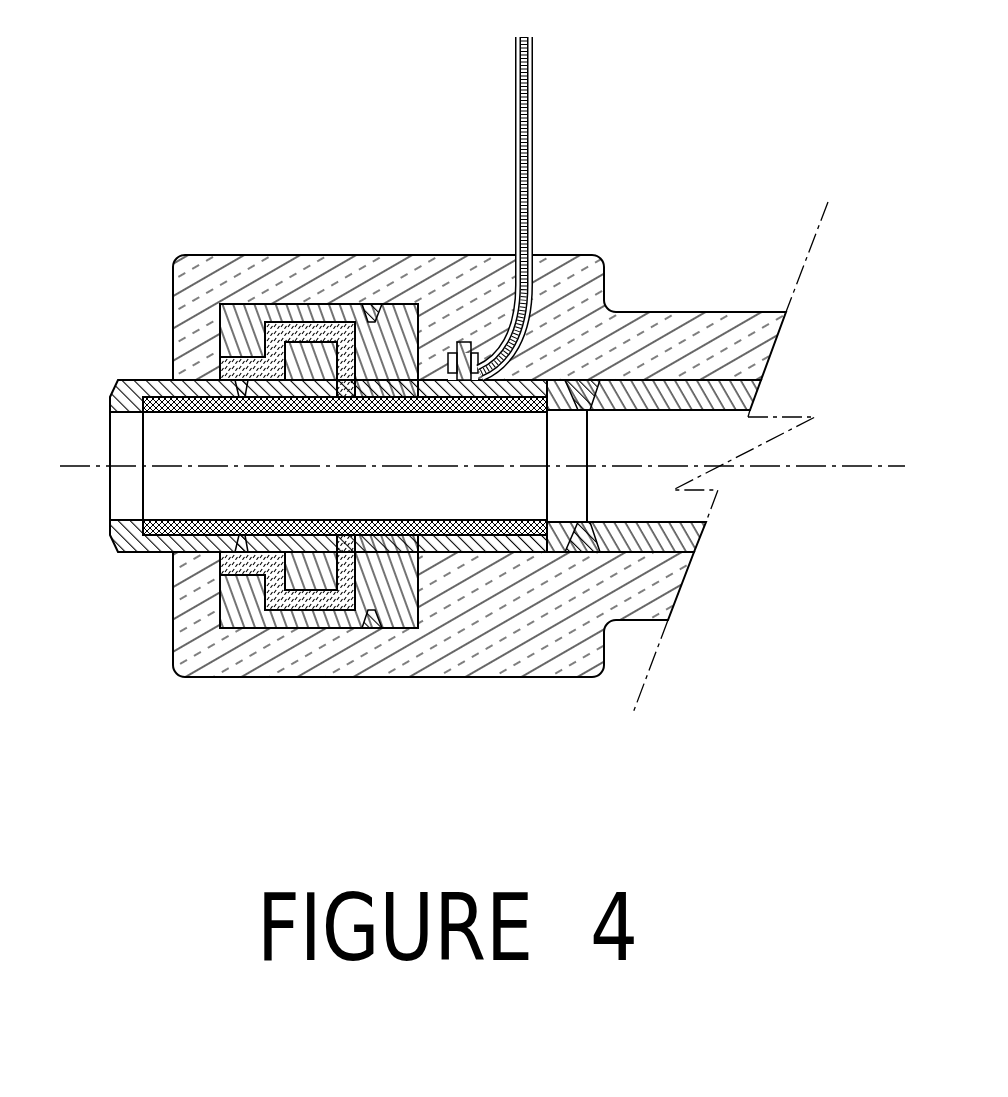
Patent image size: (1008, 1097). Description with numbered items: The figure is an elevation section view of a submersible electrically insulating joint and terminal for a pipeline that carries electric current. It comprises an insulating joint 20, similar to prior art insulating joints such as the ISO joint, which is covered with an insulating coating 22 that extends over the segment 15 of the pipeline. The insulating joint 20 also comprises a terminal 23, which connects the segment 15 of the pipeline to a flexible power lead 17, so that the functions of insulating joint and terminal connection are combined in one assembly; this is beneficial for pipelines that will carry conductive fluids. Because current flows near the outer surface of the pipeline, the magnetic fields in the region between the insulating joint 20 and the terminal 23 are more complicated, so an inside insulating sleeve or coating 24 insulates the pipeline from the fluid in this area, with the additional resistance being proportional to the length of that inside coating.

The segment of a pipeline 15 is at (663, 330).
The flexible power lead 17 is at (572, 203).
The insulating joint 20 is at (314, 588).
The insulating coating 22 is at (424, 404).
The terminal 23 is at (440, 256).
The inside insulating sleeve or coating 24 is at (410, 357).